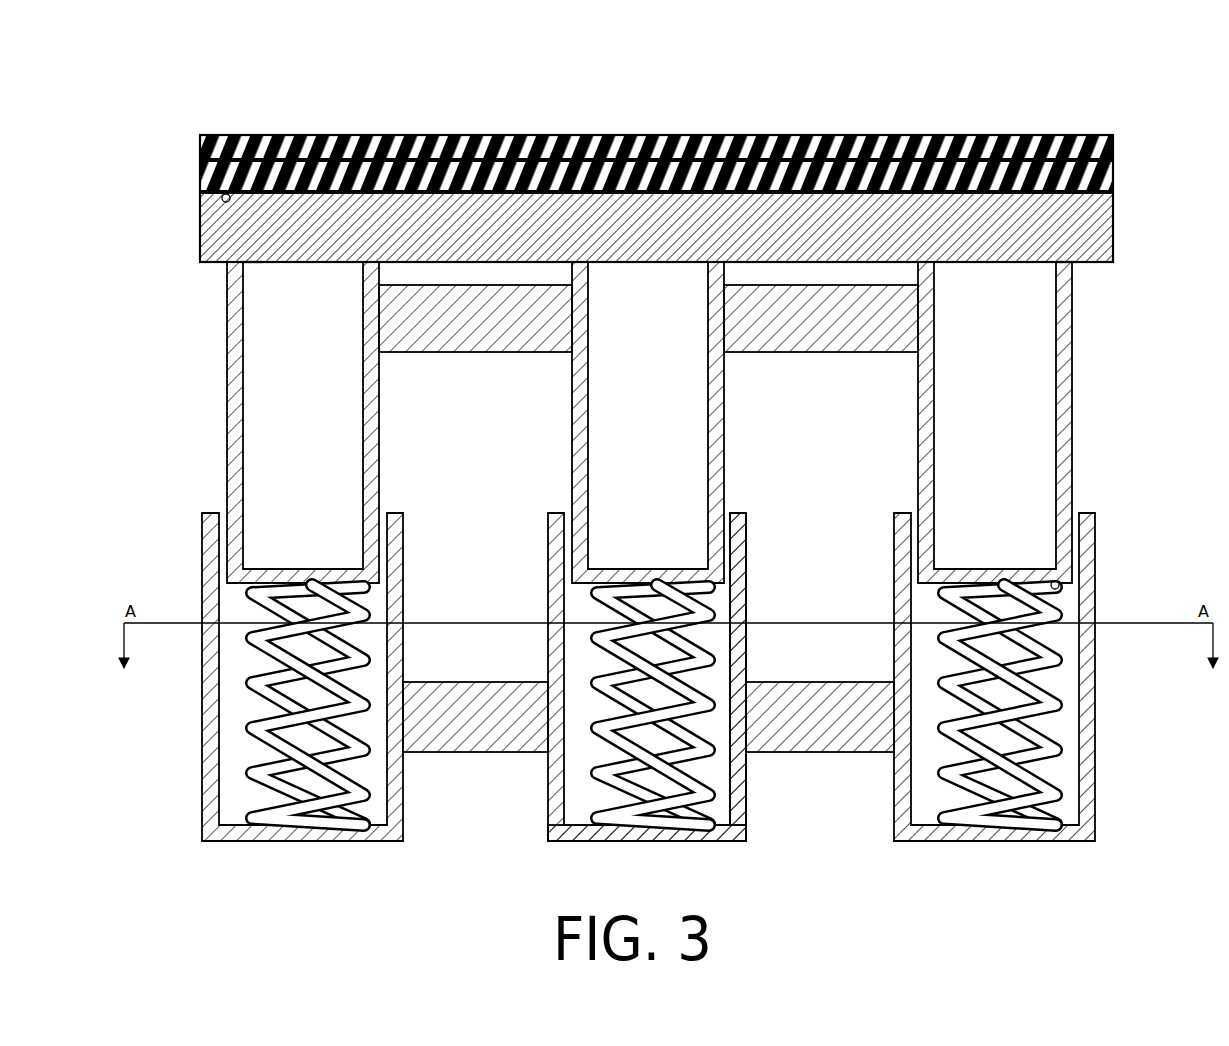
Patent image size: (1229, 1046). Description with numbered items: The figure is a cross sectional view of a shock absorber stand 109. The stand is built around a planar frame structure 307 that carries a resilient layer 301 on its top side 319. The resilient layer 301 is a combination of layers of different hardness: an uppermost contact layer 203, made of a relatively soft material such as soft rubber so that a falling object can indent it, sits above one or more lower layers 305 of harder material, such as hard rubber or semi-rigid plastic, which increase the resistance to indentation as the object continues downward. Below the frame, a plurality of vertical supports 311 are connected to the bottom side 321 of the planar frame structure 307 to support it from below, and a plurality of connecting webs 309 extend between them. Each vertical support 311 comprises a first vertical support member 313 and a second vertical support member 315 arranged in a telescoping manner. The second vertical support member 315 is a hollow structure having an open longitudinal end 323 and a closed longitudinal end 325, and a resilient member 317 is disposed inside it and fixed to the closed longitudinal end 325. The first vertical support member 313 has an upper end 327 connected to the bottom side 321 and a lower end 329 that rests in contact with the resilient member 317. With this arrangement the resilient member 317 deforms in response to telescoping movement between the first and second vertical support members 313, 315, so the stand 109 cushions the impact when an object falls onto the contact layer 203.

The shock absorber stand 109 is at (711, 104).
The contact layer 203 is at (526, 134).
The resilient layer 301 is at (198, 152).
The lower layer 305 is at (1113, 184).
The planar frame structure 307 is at (1113, 241).
The connecting web 309 is at (460, 353).
The vertical support 311 is at (1092, 493).
The first vertical support member 313 is at (1071, 448).
The second vertical support member 315 is at (1096, 790).
The resilient member 317 is at (1062, 710).
The top side 319 is at (222, 199).
The bottom side 321 is at (253, 263).
The open longitudinal end 323 is at (738, 512).
The closed longitudinal end 325 is at (656, 842).
The upper end 327 is at (1070, 265).
The lower end 329 is at (1059, 585).